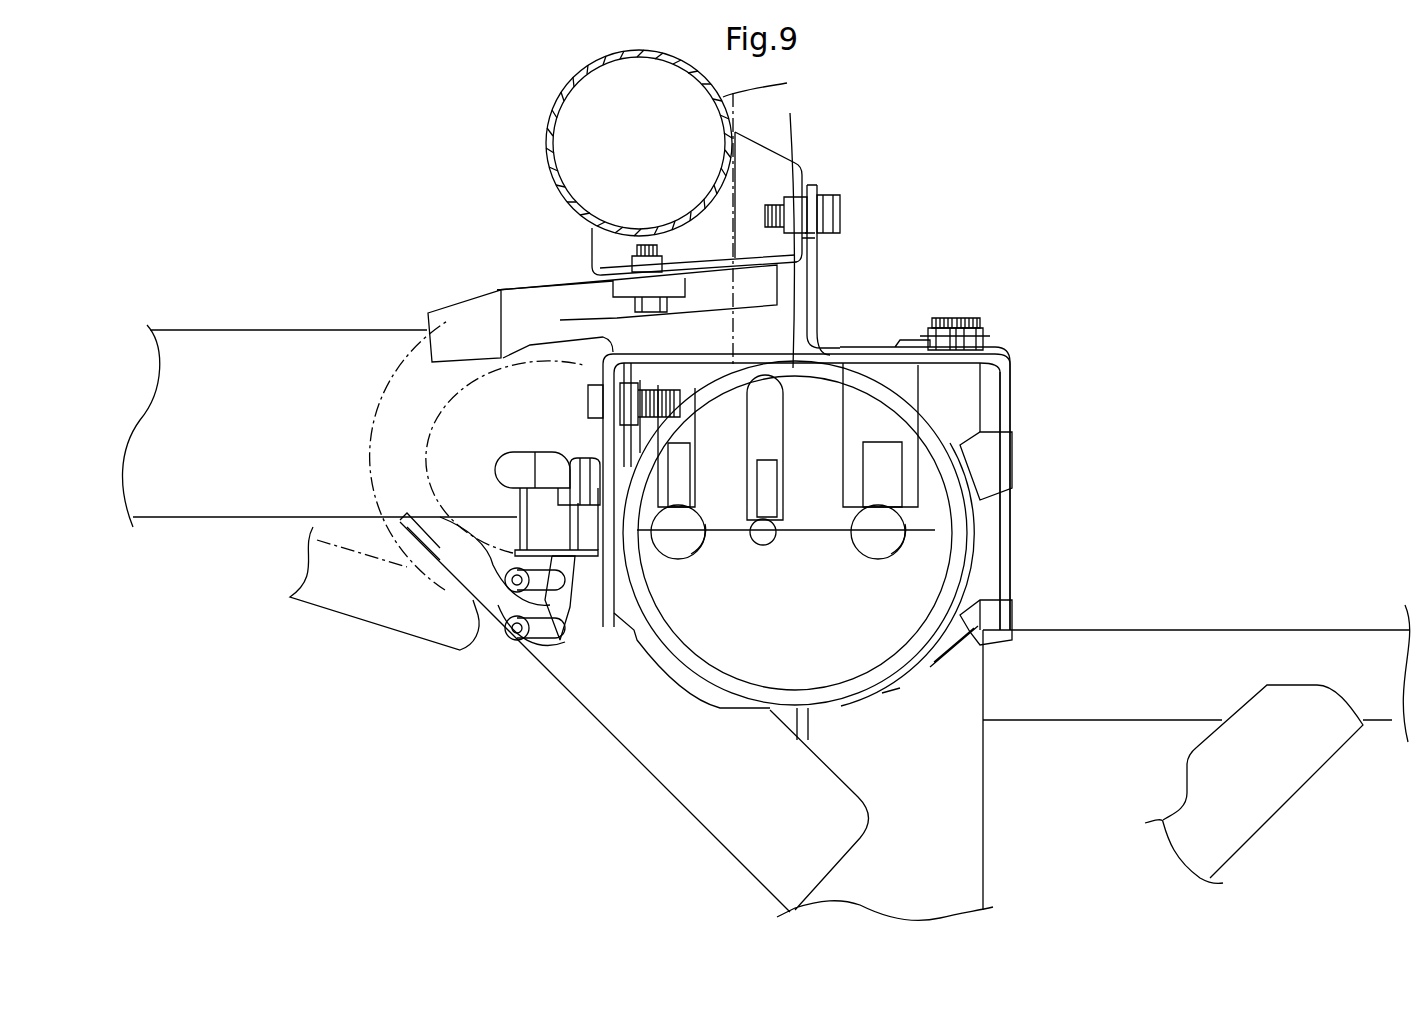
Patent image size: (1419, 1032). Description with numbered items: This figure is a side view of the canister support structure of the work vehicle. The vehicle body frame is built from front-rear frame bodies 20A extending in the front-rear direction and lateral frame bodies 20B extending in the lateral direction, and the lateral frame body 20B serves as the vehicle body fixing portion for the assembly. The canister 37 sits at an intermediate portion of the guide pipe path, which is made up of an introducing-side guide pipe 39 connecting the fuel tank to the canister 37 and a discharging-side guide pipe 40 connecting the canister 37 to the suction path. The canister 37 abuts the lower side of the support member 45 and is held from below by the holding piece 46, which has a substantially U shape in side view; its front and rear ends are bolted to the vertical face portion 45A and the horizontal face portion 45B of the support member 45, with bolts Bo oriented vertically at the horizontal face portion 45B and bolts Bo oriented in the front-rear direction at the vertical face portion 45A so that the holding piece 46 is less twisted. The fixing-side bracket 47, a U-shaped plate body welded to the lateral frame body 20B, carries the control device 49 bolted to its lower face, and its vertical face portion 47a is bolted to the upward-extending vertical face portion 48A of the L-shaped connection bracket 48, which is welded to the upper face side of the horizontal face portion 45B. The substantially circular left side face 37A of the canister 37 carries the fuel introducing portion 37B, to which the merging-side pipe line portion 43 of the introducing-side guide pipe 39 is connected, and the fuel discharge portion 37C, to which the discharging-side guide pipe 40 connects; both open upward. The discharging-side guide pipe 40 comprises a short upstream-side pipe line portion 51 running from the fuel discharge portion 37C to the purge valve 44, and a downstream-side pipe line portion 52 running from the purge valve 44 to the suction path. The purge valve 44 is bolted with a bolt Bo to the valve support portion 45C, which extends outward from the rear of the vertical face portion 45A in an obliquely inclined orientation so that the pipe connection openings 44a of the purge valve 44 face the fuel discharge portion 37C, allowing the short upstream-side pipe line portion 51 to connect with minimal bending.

The front-rear frame body 20A is at (222, 337).
The lateral frame body 20B is at (547, 130).
The canister 37 is at (969, 395).
The left side face 37A is at (930, 570).
The fuel introducing portion 37B is at (772, 497).
The fuel discharge portion 37C is at (682, 485).
The introducing-side guide pipe 39 is at (811, 118).
The discharging-side guide pipe 40 is at (322, 620).
The merging-side pipe line portion 43 is at (798, 309).
The purge valve 44 is at (507, 462).
The pipe connection openings 44a is at (553, 622).
The support member 45 is at (614, 334).
The vertical face portion 45A is at (602, 444).
The horizontal face portion 45B is at (712, 330).
The valve support portion 45C is at (513, 556).
The holding piece 46 is at (1003, 407).
The fixing-side bracket 47 is at (582, 228).
The vertical face portion 47a is at (806, 243).
The connection bracket 48 is at (907, 337).
The vertical face portion 48A is at (818, 188).
The control device 49 is at (501, 288).
The upstream-side pipe line portion 51 is at (365, 418).
The downstream-side pipe line portion 52 is at (397, 624).
The bolt Bo is at (644, 245).